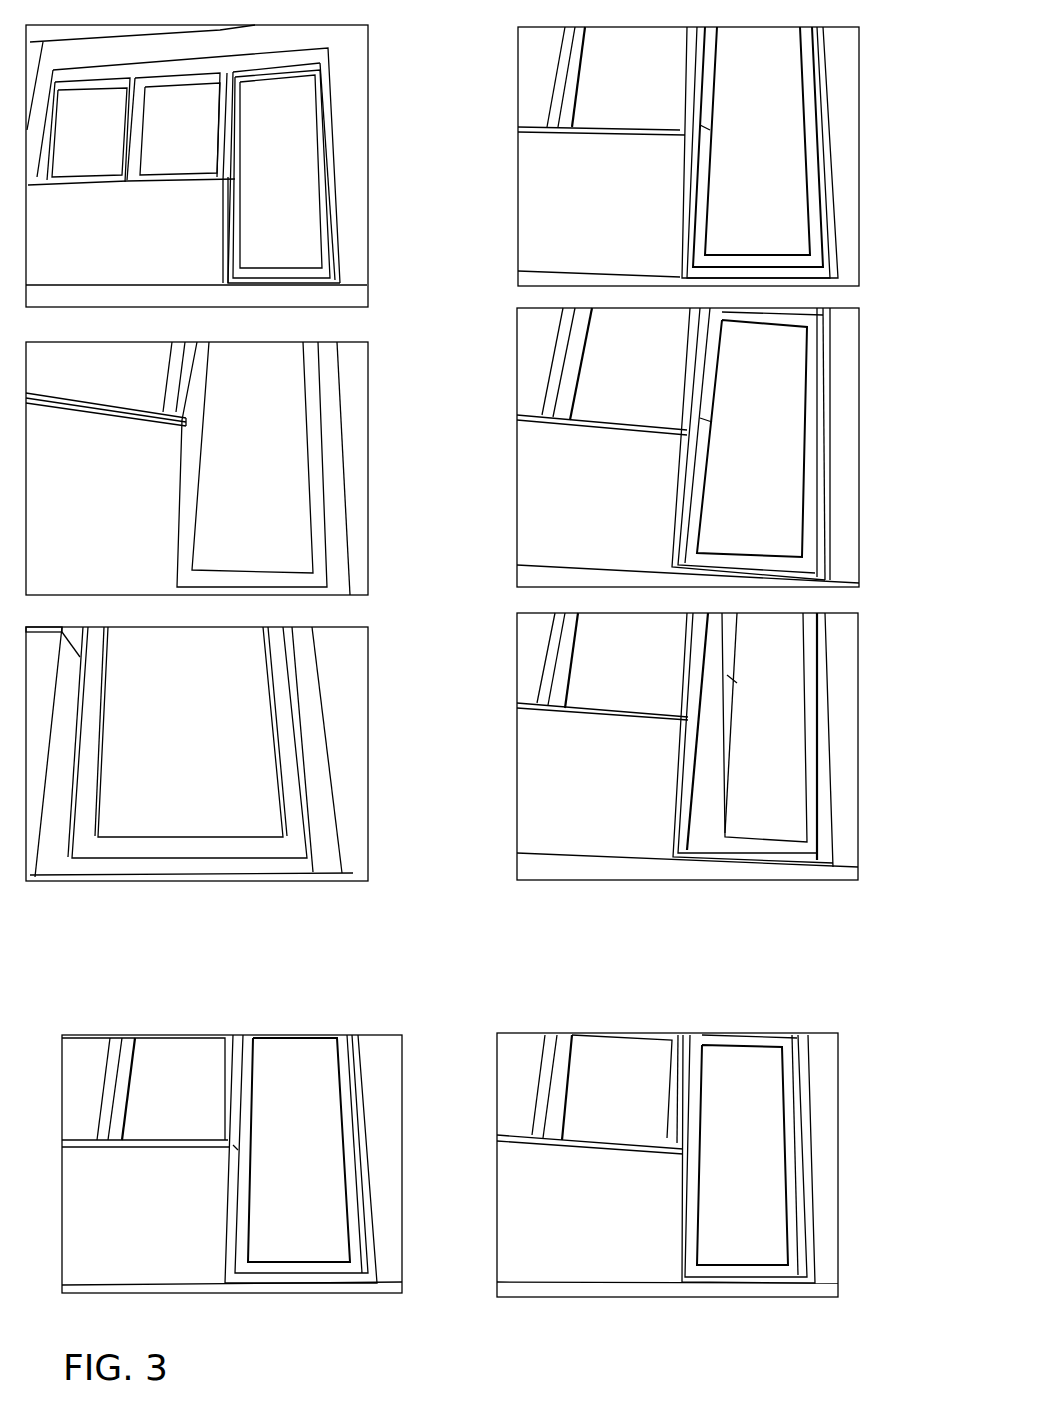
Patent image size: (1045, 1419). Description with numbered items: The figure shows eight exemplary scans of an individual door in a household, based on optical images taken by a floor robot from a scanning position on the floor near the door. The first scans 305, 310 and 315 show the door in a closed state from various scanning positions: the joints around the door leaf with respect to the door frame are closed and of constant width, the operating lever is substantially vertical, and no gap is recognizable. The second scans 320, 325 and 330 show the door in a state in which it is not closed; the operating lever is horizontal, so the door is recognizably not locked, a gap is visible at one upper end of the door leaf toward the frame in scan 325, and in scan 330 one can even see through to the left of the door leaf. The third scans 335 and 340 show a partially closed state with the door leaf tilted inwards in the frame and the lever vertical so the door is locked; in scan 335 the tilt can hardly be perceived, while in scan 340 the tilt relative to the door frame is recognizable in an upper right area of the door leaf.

The first scan 305 is at (226, 166).
The first scan 310 is at (226, 468).
The first scan 315 is at (226, 754).
The second scan 320 is at (720, 156).
The second scan 325 is at (719, 447).
The second scan 330 is at (719, 746).
The third scan 335 is at (261, 1164).
The third scan 340 is at (699, 1165).